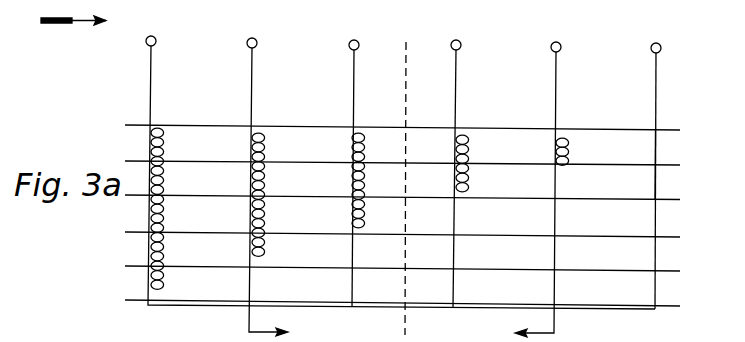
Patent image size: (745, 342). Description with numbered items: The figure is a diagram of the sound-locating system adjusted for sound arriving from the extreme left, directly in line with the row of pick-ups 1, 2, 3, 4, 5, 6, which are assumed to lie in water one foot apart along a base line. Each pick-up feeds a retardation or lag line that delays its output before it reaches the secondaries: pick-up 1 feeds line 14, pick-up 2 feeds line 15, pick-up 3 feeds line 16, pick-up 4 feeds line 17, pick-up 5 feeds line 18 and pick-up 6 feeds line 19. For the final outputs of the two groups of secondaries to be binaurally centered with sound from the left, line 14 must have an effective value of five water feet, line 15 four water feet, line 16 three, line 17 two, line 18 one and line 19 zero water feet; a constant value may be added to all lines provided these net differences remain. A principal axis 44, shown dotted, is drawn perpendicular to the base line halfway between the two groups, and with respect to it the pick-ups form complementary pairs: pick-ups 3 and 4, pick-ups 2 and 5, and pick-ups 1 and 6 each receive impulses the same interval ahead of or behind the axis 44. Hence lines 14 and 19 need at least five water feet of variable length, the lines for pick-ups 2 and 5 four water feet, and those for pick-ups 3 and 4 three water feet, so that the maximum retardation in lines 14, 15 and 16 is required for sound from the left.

The pick-up 1 is at (400, 163).
The pick-up 2 is at (267, 178).
The pick-up 3 is at (354, 164).
The pick-up 4 is at (456, 165).
The pick-up 5 is at (538, 180).
The pick-up 6 is at (656, 167).
The lag line 14 is at (151, 208).
The lag line 15 is at (251, 178).
The lag line 16 is at (351, 178).
The lag line 17 is at (455, 178).
The lag line 18 is at (555, 148).
The lag line 19 is at (655, 148).
The principal axis 44 is at (407, 79).